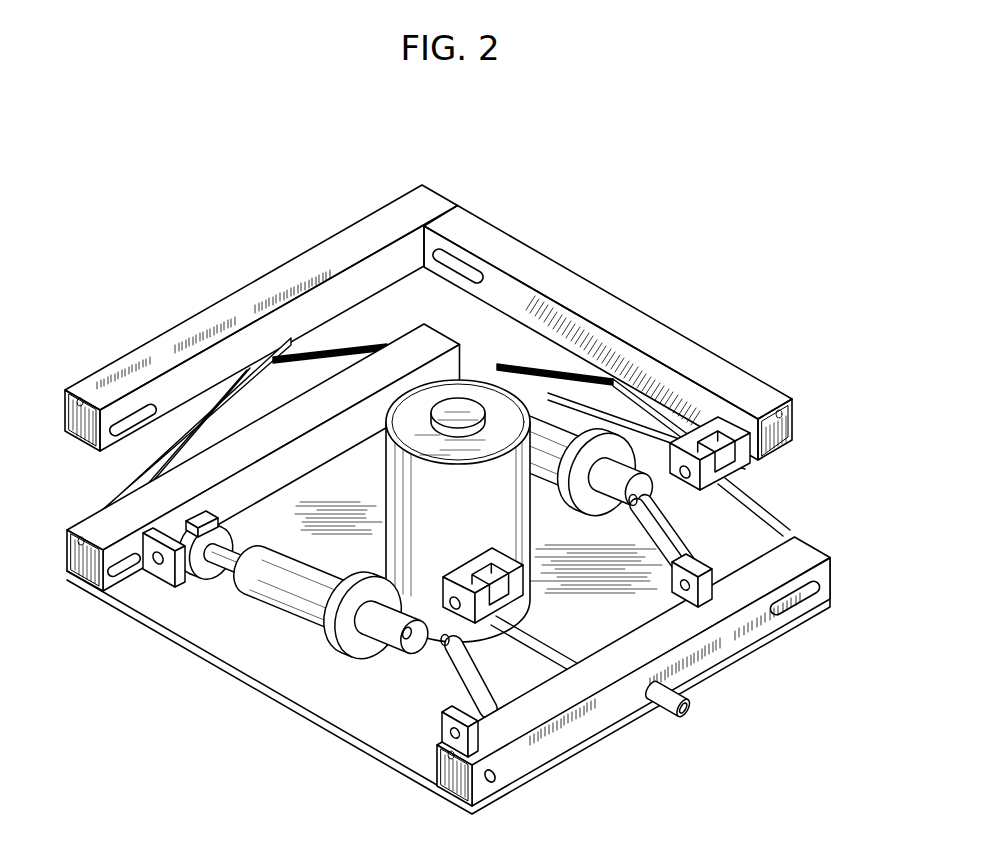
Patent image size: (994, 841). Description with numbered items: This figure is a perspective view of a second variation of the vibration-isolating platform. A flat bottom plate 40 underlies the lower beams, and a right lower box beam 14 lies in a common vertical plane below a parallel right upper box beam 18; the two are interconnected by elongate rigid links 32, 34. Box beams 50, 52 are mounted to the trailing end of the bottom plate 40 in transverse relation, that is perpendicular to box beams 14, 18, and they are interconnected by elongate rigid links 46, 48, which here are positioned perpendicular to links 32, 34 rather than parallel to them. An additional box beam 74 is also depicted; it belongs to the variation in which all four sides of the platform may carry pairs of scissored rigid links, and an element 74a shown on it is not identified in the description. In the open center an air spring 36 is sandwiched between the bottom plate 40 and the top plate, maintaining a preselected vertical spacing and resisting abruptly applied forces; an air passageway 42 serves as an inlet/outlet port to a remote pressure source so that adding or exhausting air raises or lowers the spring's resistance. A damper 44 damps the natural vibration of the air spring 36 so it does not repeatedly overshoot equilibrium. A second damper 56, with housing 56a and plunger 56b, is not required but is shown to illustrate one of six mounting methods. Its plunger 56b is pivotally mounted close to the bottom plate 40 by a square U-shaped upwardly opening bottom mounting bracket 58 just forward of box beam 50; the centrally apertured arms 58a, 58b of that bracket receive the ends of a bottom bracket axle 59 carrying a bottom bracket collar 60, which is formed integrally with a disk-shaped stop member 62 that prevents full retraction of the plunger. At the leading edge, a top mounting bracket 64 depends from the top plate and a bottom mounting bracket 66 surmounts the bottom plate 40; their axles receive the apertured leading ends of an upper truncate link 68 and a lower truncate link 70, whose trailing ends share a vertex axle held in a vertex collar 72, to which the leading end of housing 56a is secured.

The right lower box beam 14 is at (448, 658).
The right upper box beam 18 is at (608, 333).
The elongate rigid link 32 is at (540, 368).
The elongate rigid link 34 is at (760, 496).
The air spring 36 is at (458, 511).
The flat bottom plate 40 is at (498, 655).
The air passageway 42 is at (582, 650).
The damper 44 is at (548, 475).
The elongate rigid link 46 is at (330, 350).
The elongate rigid link 48 is at (126, 478).
The box beam 50 is at (263, 457).
The box beam 52 is at (261, 318).
The second damper 56 is at (302, 583).
The housing 56a is at (266, 616).
The plunger 56b is at (243, 563).
The bottom mounting bracket 58 is at (182, 531).
The arm 58a is at (173, 582).
The arm 58b is at (204, 514).
The bottom bracket axle 59 is at (157, 566).
The bottom bracket collar 60 is at (152, 524).
The stop member 62 is at (232, 545).
The top mounting bracket 64 is at (465, 575).
The bottom mounting bracket 66 is at (444, 722).
The upper truncate link 68 is at (388, 660).
The lower truncate link 70 is at (662, 566).
The vertex collar 72 is at (426, 652).
The box beam 74 is at (633, 671).
The pin 74a is at (692, 700).